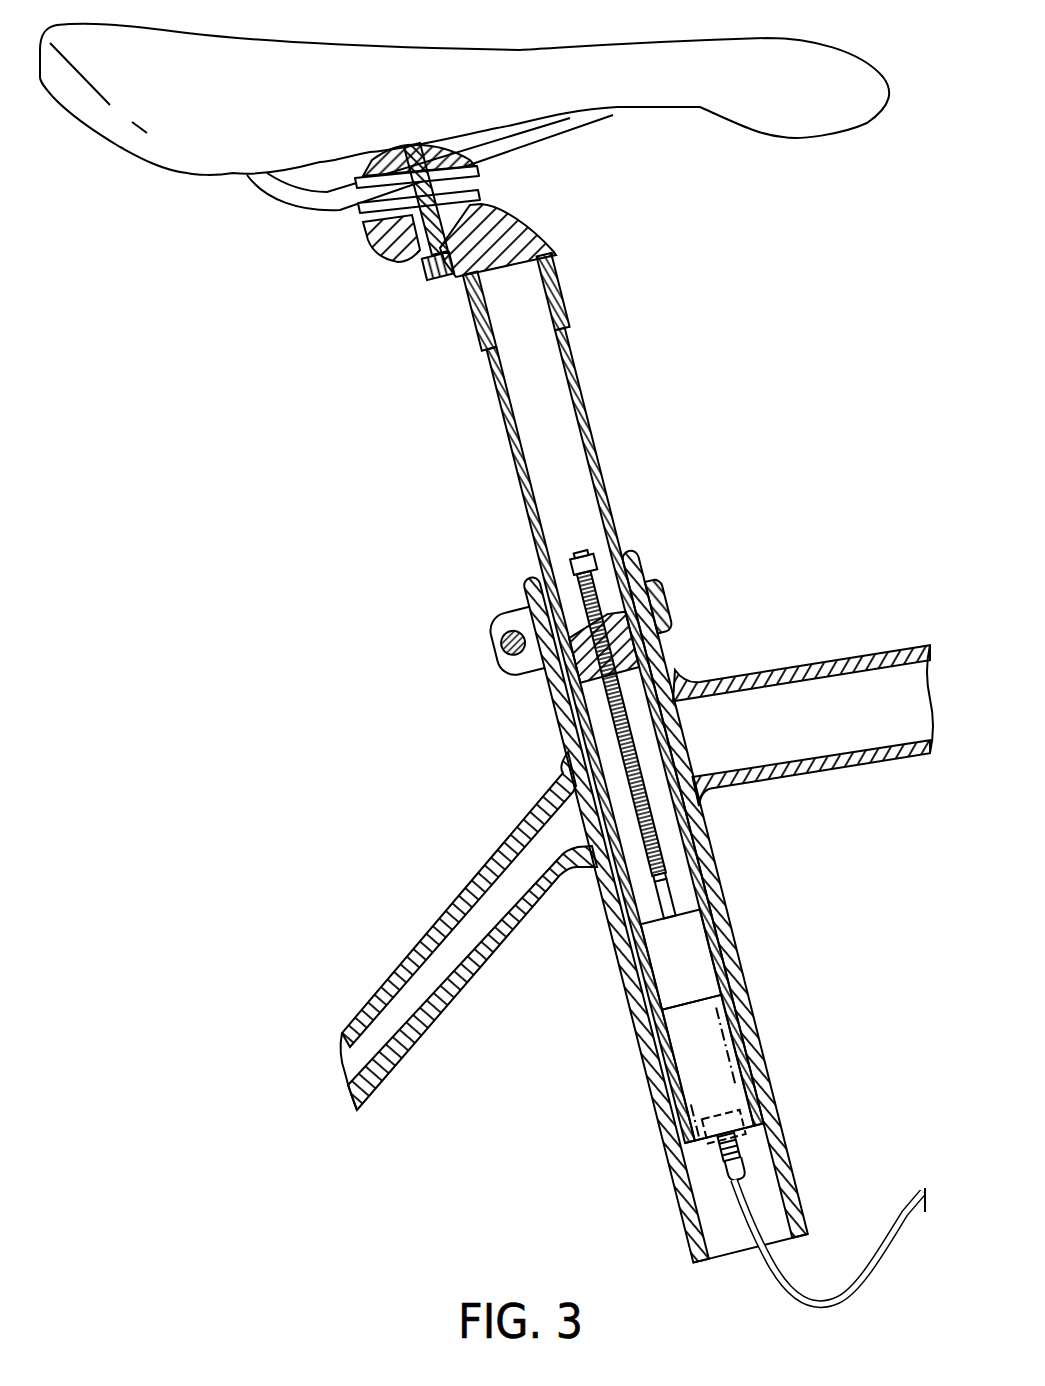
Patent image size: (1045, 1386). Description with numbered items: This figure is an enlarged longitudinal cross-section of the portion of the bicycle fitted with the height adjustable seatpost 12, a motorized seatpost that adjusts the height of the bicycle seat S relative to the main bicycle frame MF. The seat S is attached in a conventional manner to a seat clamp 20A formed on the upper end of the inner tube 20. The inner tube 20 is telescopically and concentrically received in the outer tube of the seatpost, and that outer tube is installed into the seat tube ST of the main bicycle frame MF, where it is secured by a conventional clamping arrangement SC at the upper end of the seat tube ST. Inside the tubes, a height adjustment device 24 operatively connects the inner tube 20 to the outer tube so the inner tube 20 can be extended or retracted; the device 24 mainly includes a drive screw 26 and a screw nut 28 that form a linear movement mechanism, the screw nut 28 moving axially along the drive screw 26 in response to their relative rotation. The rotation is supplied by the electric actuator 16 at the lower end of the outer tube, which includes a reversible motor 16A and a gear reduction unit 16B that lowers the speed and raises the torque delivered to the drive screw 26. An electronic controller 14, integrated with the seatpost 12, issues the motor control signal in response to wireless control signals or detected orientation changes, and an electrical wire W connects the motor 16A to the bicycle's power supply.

The bicycle seat S is at (516, 42).
The height adjustable seatpost 12 is at (592, 663).
The inner tube 20 is at (597, 466).
The seat clamp 20A is at (512, 228).
The height adjustment device 24 is at (676, 709).
The drive screw 26 is at (652, 646).
The screw nut 28 is at (628, 562).
The seat clamp lug SC is at (497, 618).
The main bicycle frame MF is at (847, 652).
The seat tube ST is at (735, 922).
The electric actuator 16 is at (633, 1007).
The motor 16A is at (690, 1043).
The gear reduction unit 16B is at (673, 960).
The electronic controller 14 is at (755, 1109).
The electrical wire W is at (880, 1260).